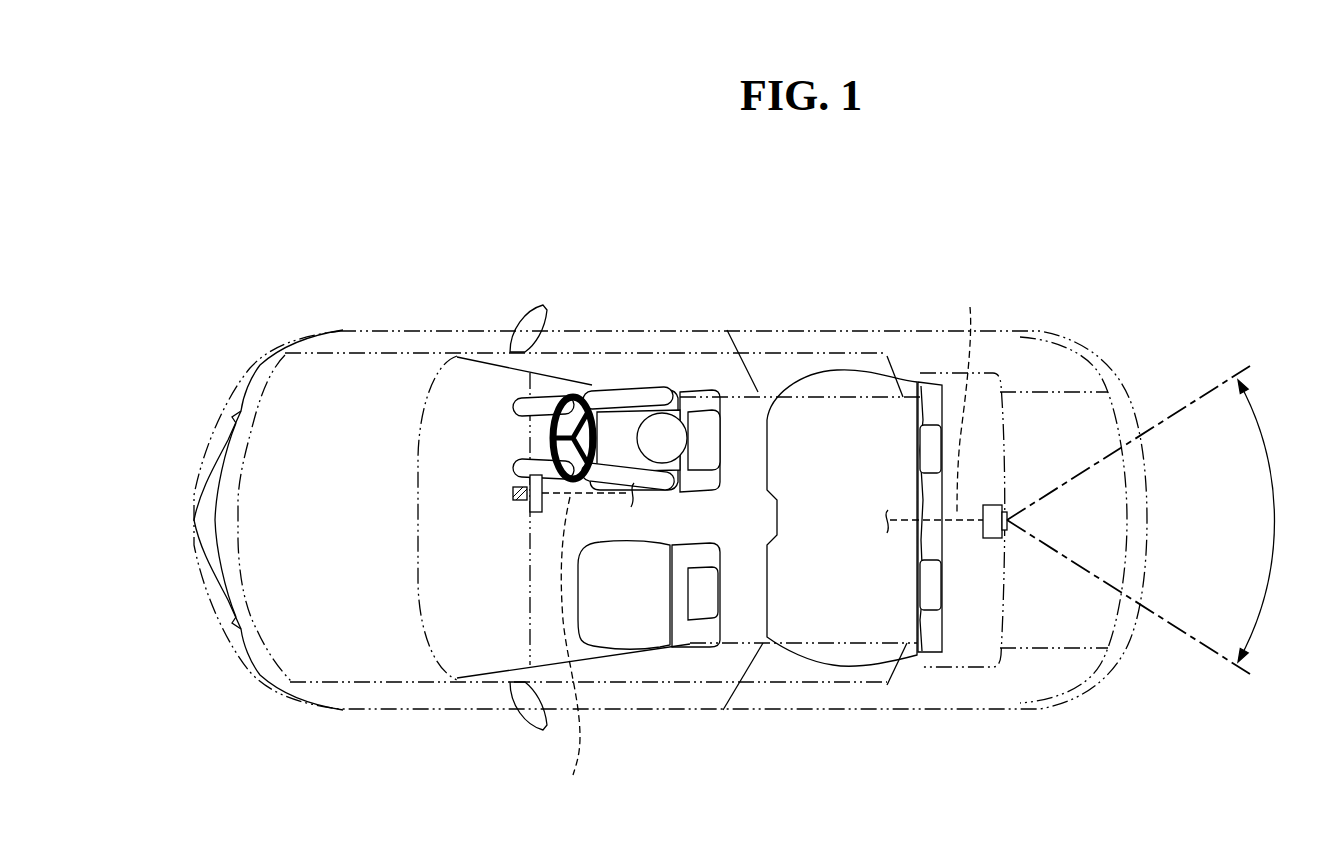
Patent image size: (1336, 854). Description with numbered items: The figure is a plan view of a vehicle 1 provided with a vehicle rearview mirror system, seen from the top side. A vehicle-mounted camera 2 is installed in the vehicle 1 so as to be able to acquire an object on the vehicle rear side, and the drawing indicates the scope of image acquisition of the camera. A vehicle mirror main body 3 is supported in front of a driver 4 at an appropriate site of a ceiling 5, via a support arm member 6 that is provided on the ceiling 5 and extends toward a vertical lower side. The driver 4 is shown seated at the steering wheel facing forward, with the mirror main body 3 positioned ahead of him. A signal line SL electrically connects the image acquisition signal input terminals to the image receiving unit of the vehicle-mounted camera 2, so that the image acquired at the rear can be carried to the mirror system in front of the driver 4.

The vehicle 1 is at (755, 332).
The vehicle-mounted camera 2 is at (984, 540).
The vehicle mirror main body 3 is at (527, 505).
The driver 4 is at (626, 423).
The ceiling 5 is at (580, 390).
The support arm member 6 is at (515, 487).
The signal line SL is at (772, 535).